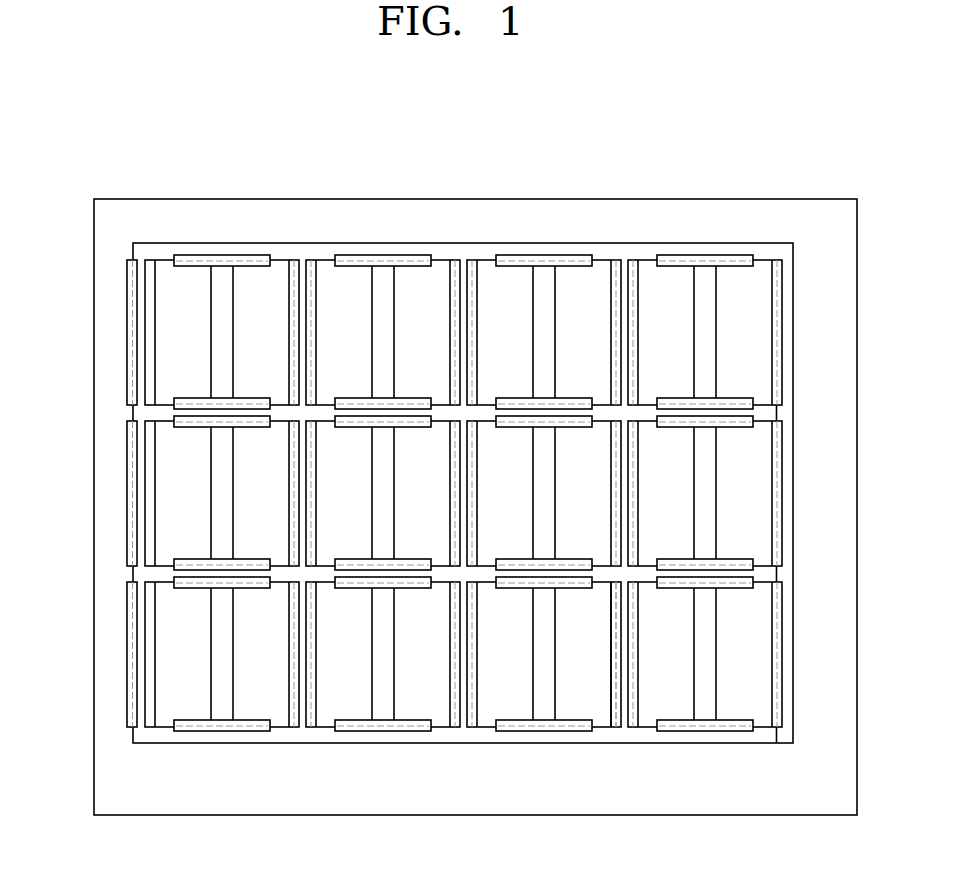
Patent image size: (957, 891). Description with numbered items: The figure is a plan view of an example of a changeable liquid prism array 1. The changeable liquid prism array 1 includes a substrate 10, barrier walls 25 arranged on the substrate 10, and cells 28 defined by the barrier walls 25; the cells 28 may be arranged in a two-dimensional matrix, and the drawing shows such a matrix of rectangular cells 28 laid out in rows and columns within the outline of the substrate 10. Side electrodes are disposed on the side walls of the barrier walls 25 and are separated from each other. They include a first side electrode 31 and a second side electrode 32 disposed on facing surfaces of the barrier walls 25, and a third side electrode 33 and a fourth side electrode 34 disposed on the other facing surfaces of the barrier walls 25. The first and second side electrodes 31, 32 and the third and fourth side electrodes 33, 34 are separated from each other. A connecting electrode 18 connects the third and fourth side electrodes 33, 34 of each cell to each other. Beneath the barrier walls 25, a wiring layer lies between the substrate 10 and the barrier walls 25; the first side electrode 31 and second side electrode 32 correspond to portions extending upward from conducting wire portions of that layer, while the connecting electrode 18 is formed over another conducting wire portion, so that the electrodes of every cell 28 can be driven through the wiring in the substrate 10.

The changeable liquid prism array 1 is at (97, 170).
The substrate 10 is at (521, 802).
The connecting electrode 18 is at (549, 687).
The barrier walls 25 is at (793, 709).
The cells 28 is at (777, 733).
The first side electrode 31 is at (609, 725).
The second side electrode 32 is at (633, 723).
The third side electrode 33 is at (745, 587).
The fourth side electrode 34 is at (673, 725).